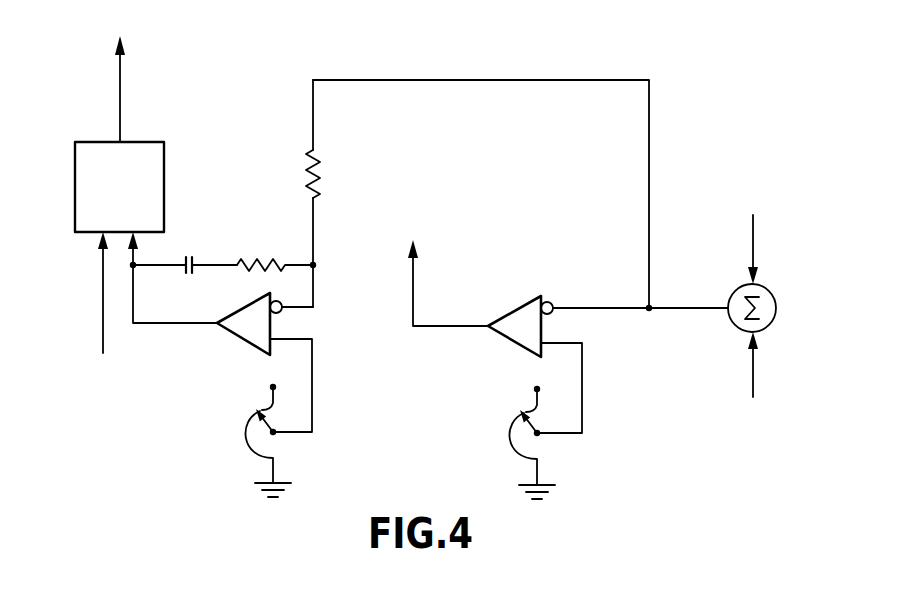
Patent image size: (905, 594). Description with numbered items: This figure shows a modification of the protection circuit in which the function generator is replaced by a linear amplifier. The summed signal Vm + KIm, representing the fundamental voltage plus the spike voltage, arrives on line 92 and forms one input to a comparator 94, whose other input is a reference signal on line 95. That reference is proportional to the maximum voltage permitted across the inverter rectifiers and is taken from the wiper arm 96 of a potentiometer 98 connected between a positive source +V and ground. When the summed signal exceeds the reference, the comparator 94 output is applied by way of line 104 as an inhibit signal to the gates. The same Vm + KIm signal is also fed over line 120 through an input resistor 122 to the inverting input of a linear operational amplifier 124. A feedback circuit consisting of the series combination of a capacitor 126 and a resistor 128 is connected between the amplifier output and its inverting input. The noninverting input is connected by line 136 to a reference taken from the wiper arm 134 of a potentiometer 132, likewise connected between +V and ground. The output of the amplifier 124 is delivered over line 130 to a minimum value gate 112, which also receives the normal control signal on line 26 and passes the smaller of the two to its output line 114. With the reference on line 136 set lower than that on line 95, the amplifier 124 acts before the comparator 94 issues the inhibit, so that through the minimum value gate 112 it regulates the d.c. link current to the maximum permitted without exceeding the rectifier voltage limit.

The minimum value gate 112 is at (164, 187).
The output line of minimum value gate 114 is at (120, 102).
The normal control signal line 26 is at (103, 297).
The amplifier output line 130 is at (158, 282).
The capacitor 126 is at (201, 248).
The resistor 128 is at (273, 260).
The input resistor 122 is at (328, 171).
The line 120 is at (518, 78).
The linear operational amplifier 124 is at (234, 338).
The line 136 is at (312, 373).
The wiper arm 134 is at (248, 423).
The potentiometer 132 is at (252, 453).
The line 104 is at (413, 293).
The comparator 94 is at (522, 300).
The reference signal line 95 is at (582, 408).
The wiper arm 96 is at (512, 423).
The potentiometer 98 is at (512, 450).
The line 92 is at (703, 305).